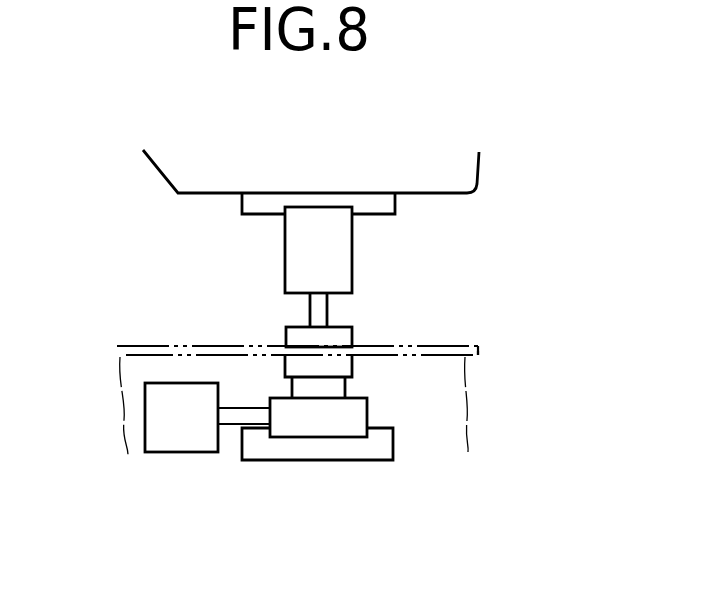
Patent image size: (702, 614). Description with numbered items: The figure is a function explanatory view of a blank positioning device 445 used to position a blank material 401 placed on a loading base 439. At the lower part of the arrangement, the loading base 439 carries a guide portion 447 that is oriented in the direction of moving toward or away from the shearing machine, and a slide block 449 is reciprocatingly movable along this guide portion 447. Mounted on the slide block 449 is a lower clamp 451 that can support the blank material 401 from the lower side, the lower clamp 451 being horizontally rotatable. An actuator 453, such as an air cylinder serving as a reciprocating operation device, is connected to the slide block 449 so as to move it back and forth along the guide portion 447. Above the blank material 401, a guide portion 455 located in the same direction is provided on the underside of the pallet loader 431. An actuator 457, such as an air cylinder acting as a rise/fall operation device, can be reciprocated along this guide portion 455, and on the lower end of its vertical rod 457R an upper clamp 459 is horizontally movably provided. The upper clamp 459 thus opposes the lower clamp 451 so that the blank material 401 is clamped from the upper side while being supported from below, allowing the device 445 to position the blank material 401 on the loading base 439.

The pallet loader 431 is at (168, 165).
The guide portion 455 is at (265, 198).
The blank positioning device 445 is at (468, 326).
The actuator 457 is at (354, 236).
The vertical rod 457R is at (329, 310).
The upper clamp 459 is at (285, 334).
The lower clamp 451 is at (285, 370).
The blank material 401 is at (478, 350).
The loading base 439 is at (470, 425).
The slide block 449 is at (302, 428).
The guide portion 447 is at (370, 455).
The actuator 453 is at (182, 452).